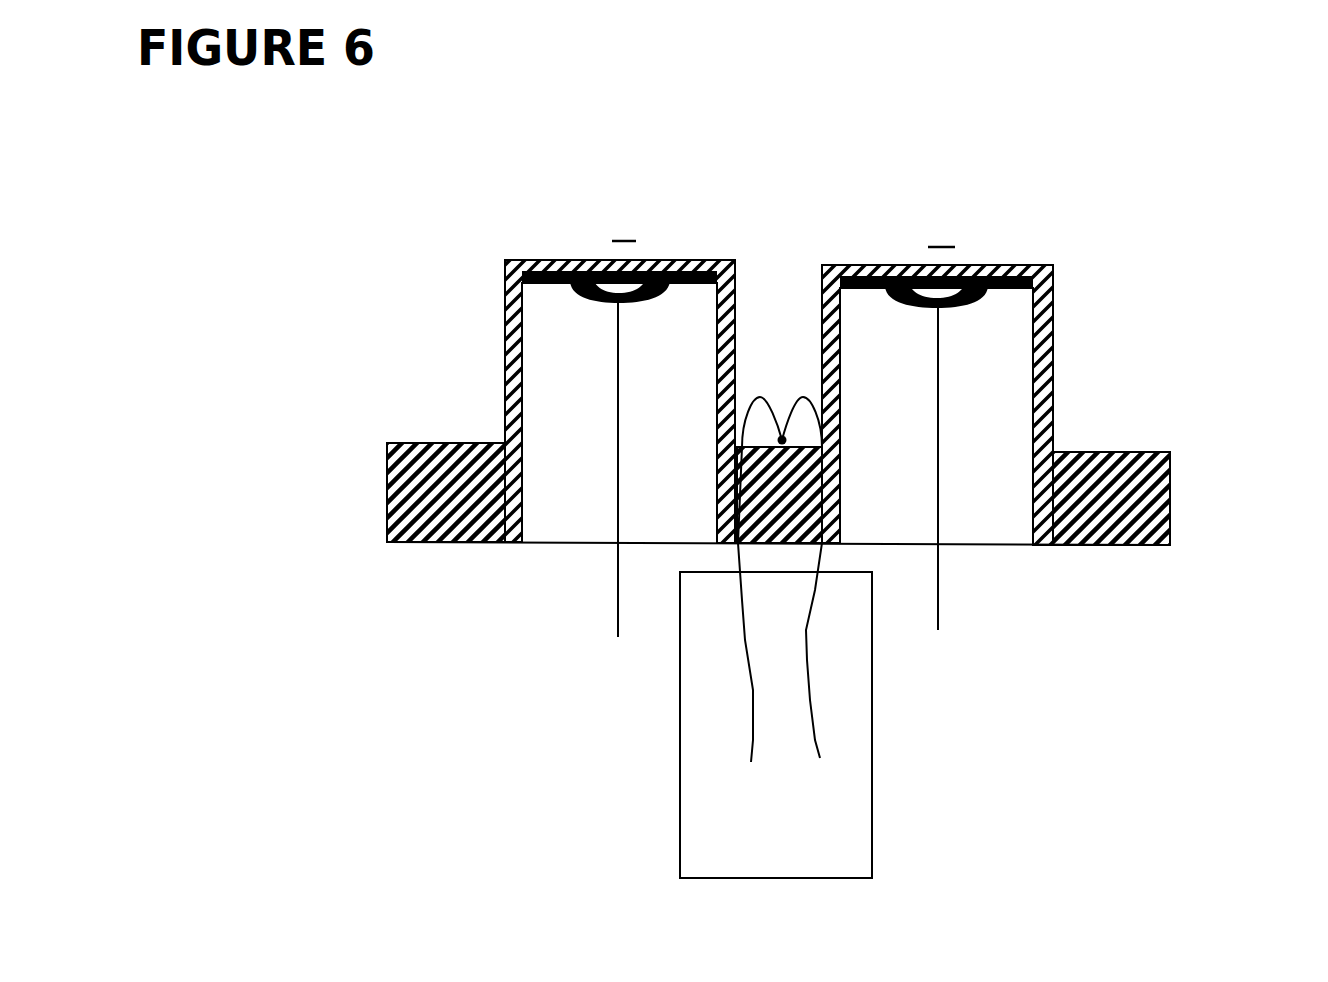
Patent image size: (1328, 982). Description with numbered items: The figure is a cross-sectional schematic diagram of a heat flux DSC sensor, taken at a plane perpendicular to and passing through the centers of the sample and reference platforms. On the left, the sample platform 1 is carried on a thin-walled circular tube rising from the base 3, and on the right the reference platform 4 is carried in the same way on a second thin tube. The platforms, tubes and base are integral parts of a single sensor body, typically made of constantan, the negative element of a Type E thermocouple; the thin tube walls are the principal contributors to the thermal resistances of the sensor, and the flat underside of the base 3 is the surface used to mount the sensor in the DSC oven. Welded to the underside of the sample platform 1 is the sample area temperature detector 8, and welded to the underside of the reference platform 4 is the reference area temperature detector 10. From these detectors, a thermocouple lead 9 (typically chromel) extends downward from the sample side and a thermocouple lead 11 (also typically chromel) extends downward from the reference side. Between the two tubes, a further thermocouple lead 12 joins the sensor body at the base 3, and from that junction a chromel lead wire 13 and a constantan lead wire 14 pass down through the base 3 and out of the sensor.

The sample platform 1 is at (555, 256).
The base 3 is at (1185, 478).
The reference platform 4 is at (1006, 253).
The sample area temperature detector 8 is at (574, 302).
The thermocouple lead 9 is at (608, 580).
The reference area temperature detector 10 is at (992, 301).
The thermocouple lead 11 is at (953, 568).
The thermocouple lead 12 is at (777, 397).
The lead wire 13 is at (730, 685).
The lead wire 14 is at (817, 686).